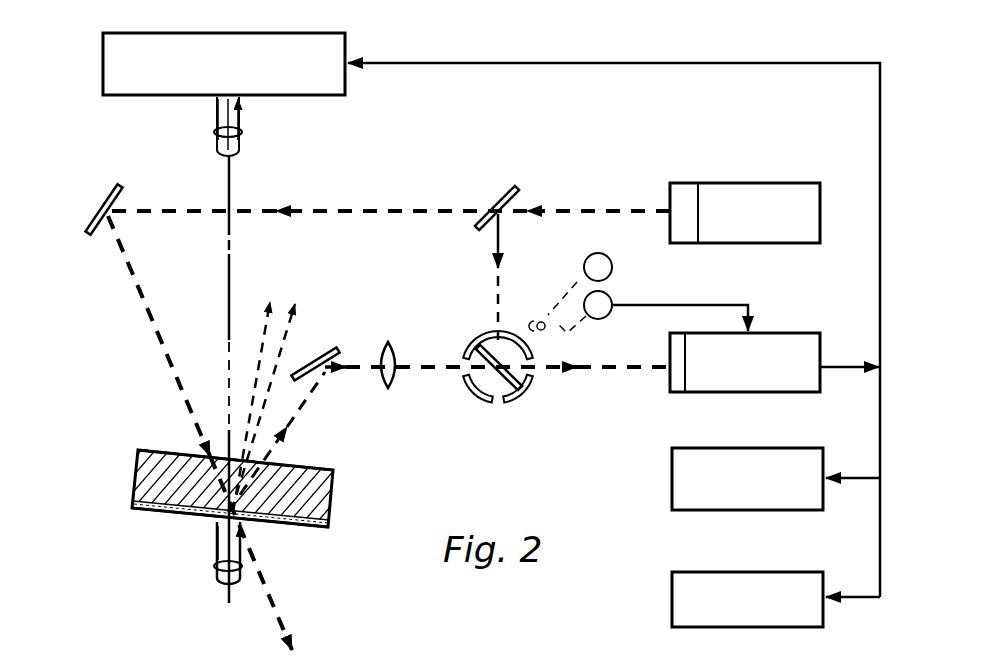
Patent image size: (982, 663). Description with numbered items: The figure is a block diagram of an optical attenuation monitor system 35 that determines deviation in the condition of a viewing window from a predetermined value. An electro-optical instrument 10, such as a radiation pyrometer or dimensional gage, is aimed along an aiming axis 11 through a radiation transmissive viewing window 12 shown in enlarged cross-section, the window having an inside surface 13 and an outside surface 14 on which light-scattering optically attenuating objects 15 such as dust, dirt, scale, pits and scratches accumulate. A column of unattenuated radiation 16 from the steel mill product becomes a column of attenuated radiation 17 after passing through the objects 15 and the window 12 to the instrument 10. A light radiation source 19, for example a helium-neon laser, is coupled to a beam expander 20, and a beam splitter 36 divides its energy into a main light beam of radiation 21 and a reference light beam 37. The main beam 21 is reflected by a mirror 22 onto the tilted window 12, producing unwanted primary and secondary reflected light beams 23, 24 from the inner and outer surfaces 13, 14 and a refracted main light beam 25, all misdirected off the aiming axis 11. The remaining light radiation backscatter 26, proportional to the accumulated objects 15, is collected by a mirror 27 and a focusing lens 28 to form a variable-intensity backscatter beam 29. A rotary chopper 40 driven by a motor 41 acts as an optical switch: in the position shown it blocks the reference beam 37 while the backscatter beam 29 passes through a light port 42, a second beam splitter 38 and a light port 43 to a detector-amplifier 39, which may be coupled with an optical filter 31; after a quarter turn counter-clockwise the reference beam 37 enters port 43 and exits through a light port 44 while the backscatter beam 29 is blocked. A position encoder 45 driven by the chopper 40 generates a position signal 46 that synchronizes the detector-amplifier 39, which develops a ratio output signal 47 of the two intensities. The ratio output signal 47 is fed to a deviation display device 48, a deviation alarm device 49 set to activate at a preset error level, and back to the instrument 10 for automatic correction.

The electro-optical instrument 10 is at (310, 97).
The aiming axis 11 is at (232, 262).
The viewing window 12 is at (150, 488).
The inside surface 13 is at (178, 450).
The outside surface 14 is at (330, 510).
The light-scattering optically attenuating objects 15 is at (282, 530).
The column of unattenuated radiation 16 is at (215, 564).
The column of attenuated radiation 17 is at (245, 132).
The light radiation source 19 is at (750, 183).
The beam expander 20 is at (683, 182).
The main light beam of radiation 21 is at (352, 210).
The mirror 22 is at (106, 202).
The primary reflected light beam 23 is at (257, 338).
The secondary reflected light beam 24 is at (290, 327).
The refracted main light beam of radiation 25 is at (283, 626).
The light radiation backscatter 26 is at (284, 422).
The mirror 27 is at (322, 346).
The focusing lens 28 is at (392, 340).
The backscatter beam 29 is at (444, 363).
The optical filter 31 is at (668, 342).
The optical attenuation monitor system 35 is at (566, 149).
The beam splitter 36 is at (497, 195).
The reference light beam 37 is at (497, 248).
The second beam splitter 38 is at (510, 333).
The detector-amplifier 39 is at (780, 333).
The rotary chopper 40 is at (480, 335).
The motor 41 is at (610, 258).
The light port 42 is at (463, 380).
The light port 43 is at (538, 372).
The light port 44 is at (498, 406).
The position encoder 45 is at (612, 298).
The position signal 46 is at (660, 306).
The ratio output signal 47 is at (850, 363).
The deviation display device 48 is at (738, 448).
The deviation alarm device 49 is at (705, 572).